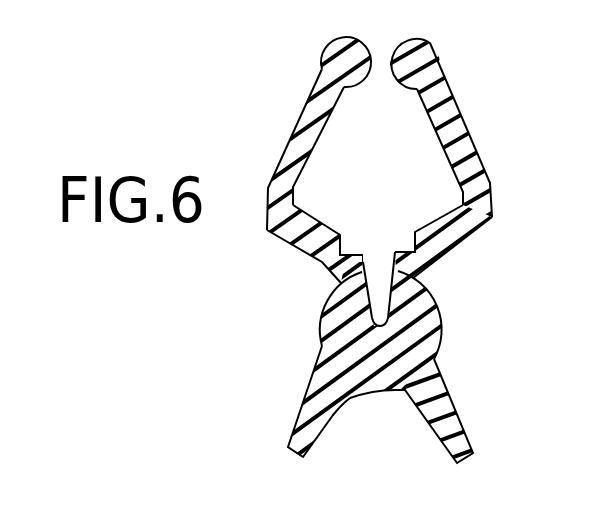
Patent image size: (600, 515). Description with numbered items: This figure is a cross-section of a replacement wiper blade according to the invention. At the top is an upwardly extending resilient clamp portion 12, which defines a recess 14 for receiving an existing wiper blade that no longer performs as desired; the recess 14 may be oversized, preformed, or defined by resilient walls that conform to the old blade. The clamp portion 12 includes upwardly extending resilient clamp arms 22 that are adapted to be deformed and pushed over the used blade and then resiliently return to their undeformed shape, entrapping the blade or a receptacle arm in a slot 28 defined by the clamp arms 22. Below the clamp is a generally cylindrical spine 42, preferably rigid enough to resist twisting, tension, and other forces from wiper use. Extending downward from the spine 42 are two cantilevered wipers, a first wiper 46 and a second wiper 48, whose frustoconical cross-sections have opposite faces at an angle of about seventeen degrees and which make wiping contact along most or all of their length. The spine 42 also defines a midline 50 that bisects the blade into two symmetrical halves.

The clamp portion 12 is at (303, 118).
The recess 14 is at (333, 184).
The clamp arms 22 is at (424, 53).
The slot 28 is at (337, 271).
The spine 42 is at (382, 363).
The first wiper 46 is at (310, 412).
The second wiper 48 is at (448, 402).
The midline 50 is at (407, 284).